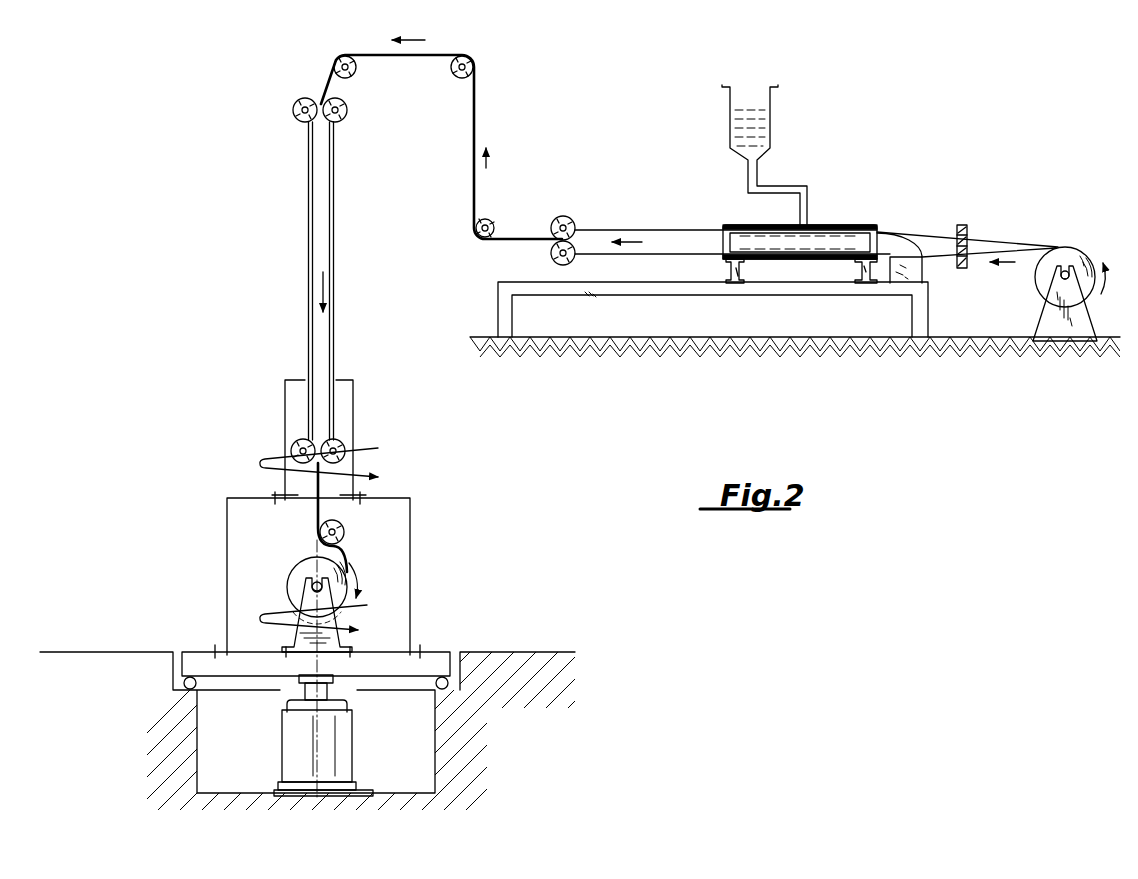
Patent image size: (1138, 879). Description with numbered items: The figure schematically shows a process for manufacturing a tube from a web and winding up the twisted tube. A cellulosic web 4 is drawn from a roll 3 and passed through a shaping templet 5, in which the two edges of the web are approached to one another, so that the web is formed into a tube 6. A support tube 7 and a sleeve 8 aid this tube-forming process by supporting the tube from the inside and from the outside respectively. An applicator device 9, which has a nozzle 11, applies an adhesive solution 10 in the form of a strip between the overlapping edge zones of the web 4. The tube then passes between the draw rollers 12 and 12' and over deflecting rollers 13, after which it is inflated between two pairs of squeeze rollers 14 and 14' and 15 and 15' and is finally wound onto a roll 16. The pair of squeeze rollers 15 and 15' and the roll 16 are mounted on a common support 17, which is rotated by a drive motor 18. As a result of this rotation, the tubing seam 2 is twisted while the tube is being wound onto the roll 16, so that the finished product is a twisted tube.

The tubing seam 2 is at (307, 227).
The roll 3 is at (1035, 281).
The cellulosic web 4 is at (1023, 238).
The shaping templet 5 is at (962, 224).
The tube 6 is at (473, 185).
The support tube 7 is at (838, 246).
The sleeve 8 is at (855, 226).
The applicator device 9 is at (816, 151).
The adhesive solution 10 is at (760, 131).
The nozzle 11 is at (807, 224).
The draw roller 12 is at (543, 258).
The draw roller 12' is at (577, 211).
The deflecting roller 13 is at (452, 70).
The squeeze roller 14 is at (349, 124).
The squeeze roller 14' is at (284, 123).
The squeeze roller 15 is at (355, 435).
The squeeze roller 15' is at (276, 432).
The roll 16 is at (298, 570).
The common support 17 is at (413, 538).
The drive motor 18 is at (287, 746).